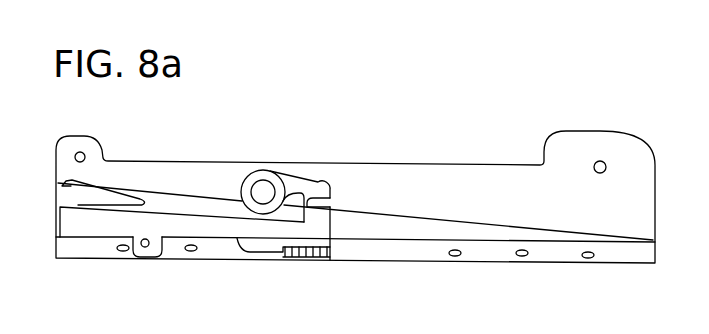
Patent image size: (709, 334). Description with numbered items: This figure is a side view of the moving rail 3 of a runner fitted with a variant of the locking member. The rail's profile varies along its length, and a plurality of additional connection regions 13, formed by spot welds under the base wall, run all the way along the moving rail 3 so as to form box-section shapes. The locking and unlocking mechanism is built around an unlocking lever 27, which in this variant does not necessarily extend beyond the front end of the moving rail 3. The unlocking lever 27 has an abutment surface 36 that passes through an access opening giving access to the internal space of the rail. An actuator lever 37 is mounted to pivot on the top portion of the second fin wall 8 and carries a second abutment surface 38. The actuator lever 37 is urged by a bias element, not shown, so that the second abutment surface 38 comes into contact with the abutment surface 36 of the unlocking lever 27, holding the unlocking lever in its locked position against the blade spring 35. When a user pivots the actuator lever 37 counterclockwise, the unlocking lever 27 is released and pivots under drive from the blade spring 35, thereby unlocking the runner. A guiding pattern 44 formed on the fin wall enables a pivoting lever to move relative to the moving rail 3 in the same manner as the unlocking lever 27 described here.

The moving rail 3 is at (452, 140).
The second fin wall 8 is at (510, 183).
The additional connection regions 13 is at (456, 256).
The unlocking lever 27 is at (80, 220).
The blade spring 35 is at (118, 197).
The abutment surface 36 is at (331, 206).
The actuator lever 37 is at (291, 183).
The second abutment surface 38 is at (317, 185).
The guiding pattern 44 is at (146, 245).